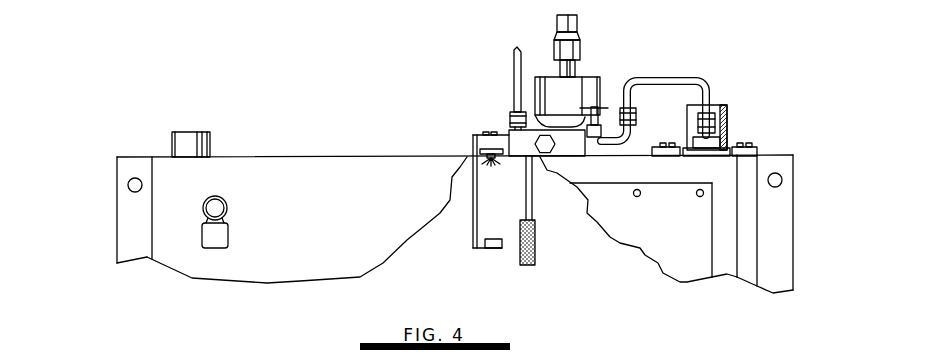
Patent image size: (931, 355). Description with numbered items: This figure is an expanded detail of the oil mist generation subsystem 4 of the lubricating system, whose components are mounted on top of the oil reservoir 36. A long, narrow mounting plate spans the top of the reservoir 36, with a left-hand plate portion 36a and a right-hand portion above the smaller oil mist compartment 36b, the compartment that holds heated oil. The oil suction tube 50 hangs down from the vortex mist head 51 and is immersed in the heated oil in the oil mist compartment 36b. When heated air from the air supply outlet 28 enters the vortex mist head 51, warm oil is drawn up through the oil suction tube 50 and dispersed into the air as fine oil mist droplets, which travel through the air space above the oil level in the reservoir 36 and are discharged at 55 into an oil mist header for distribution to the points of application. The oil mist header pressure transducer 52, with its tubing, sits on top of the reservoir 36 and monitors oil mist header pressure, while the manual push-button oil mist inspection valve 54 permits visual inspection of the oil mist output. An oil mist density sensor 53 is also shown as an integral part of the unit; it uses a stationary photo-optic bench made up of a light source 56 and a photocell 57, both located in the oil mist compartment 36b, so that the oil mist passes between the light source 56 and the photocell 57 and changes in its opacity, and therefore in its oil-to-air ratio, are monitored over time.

The oil mist generation subsystem 4 is at (392, 126).
The air supply outlet 28 is at (514, 65).
The oil reservoir 36 is at (338, 176).
The left plate portion 36a is at (135, 227).
The oil mist compartment 36b is at (703, 242).
The oil suction tube 50 is at (532, 203).
The vortex mist head 51 is at (573, 138).
The oil mist header pressure transducer 52 is at (578, 88).
The oil mist density sensor 53 is at (488, 132).
The oil mist inspection valve 54 is at (218, 203).
The oil mist discharge 55 is at (188, 142).
The light source 56 is at (482, 152).
The photocell 57 is at (499, 248).